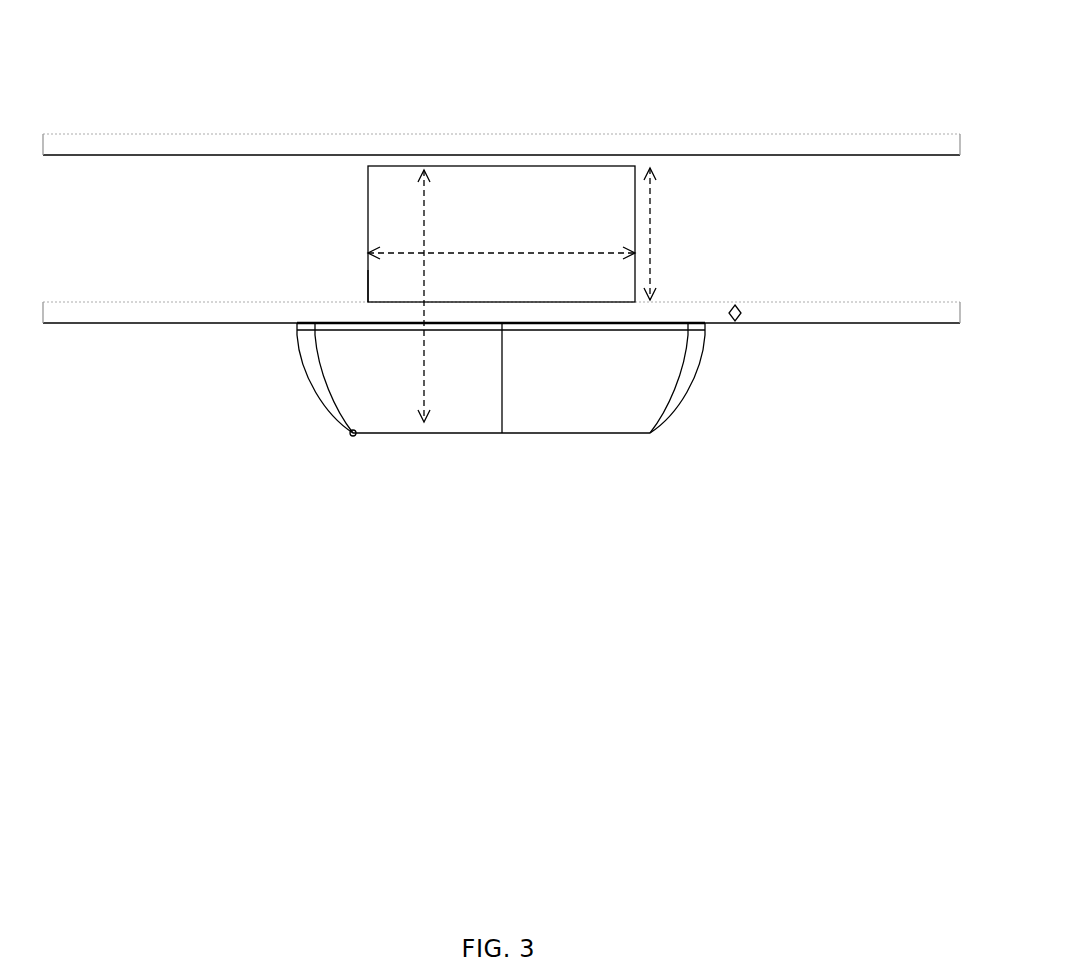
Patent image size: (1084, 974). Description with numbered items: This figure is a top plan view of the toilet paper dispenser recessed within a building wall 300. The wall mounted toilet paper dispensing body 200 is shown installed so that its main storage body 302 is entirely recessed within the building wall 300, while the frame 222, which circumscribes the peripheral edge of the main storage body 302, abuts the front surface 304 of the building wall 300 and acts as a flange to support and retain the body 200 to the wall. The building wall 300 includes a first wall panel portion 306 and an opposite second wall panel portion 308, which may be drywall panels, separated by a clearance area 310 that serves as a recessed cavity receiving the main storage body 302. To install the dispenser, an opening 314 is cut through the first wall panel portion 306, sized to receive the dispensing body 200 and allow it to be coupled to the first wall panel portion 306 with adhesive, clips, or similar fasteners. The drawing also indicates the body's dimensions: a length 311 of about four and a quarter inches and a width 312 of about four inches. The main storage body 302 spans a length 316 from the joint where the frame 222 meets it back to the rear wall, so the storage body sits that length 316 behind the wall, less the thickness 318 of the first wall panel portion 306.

The wall mounted toilet paper dispensing body 200 is at (262, 255).
The frame 222 is at (443, 428).
The building wall 300 is at (800, 352).
The main storage body 302 is at (508, 203).
The front surface 304 is at (182, 323).
The first wall panel portion 306 is at (910, 312).
The second wall panel portion 308 is at (705, 130).
The clearance area 310 is at (770, 225).
The length 311 is at (424, 212).
The width 312 is at (580, 255).
The opening 314 is at (363, 292).
The length 316 is at (650, 238).
The thickness 318 is at (741, 313).